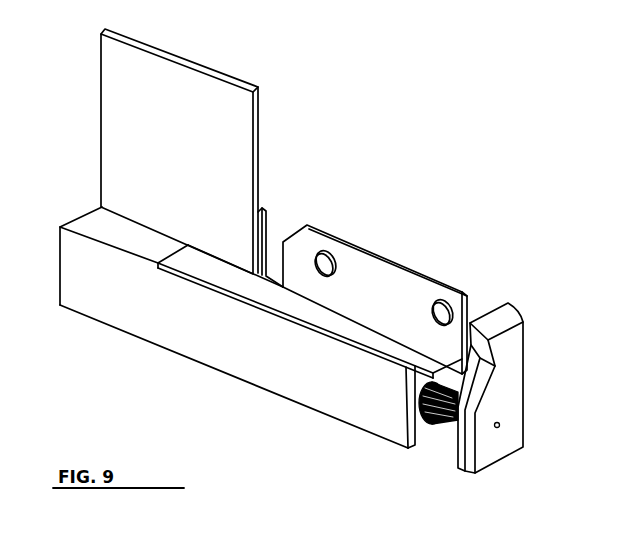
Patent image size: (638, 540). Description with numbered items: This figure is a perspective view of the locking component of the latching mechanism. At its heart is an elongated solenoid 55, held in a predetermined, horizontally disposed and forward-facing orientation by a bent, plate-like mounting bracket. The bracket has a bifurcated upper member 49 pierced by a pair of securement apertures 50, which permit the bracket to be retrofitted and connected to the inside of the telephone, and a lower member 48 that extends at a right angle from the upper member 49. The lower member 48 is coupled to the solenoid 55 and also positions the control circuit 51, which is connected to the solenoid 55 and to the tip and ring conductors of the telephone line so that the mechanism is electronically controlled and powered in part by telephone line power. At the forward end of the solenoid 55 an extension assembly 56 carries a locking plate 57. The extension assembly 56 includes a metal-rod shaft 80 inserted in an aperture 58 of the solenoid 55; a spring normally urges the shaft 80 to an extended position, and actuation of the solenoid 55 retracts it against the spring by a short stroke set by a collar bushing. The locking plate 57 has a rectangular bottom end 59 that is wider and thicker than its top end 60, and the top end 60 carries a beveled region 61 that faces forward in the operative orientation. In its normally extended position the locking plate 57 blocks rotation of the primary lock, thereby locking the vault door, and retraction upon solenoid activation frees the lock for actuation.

The lower member 48 is at (280, 305).
The upper member 49 is at (390, 280).
The securement apertures 50 is at (338, 252).
The control circuit 51 is at (117, 113).
The solenoid 55 is at (117, 320).
The extension assembly 56 is at (433, 430).
The locking plate 57 is at (512, 380).
The aperture 58 is at (502, 428).
The bottom end 59 is at (489, 452).
The top end 60 is at (534, 381).
The beveled region 61 is at (502, 318).
The shaft 80 is at (500, 423).